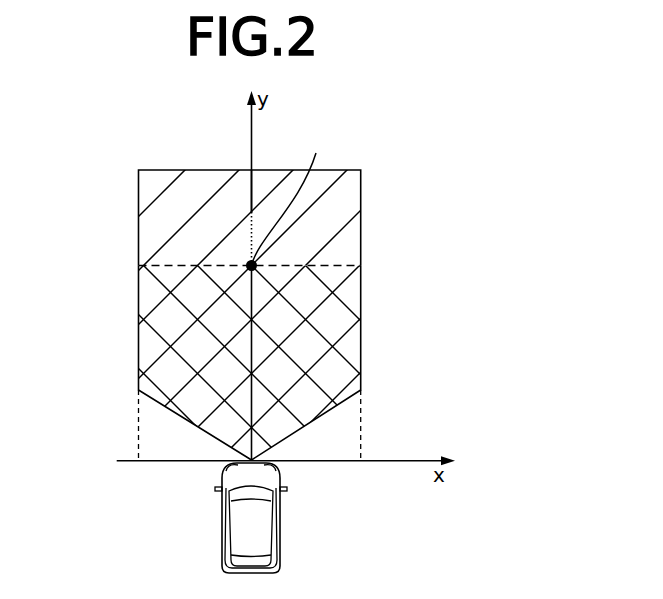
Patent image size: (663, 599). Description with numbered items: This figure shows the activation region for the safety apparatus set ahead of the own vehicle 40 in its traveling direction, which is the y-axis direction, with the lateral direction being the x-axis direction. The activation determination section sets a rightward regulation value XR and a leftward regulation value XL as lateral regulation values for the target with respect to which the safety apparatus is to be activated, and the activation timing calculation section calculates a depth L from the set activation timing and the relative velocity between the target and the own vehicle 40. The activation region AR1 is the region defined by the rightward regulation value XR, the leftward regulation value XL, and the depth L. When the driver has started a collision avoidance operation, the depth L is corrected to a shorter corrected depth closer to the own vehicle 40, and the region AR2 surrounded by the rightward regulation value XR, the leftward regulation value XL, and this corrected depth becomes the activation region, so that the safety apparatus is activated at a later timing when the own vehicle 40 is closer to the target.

The own vehicle 40 is at (280, 542).
The activation region AR1 is at (350, 246).
The corrected activation region AR2 is at (335, 310).
The depth of the activation region L is at (244, 180).
The leftward regulation value XL is at (138, 438).
The rightward regulation value XR is at (362, 439).